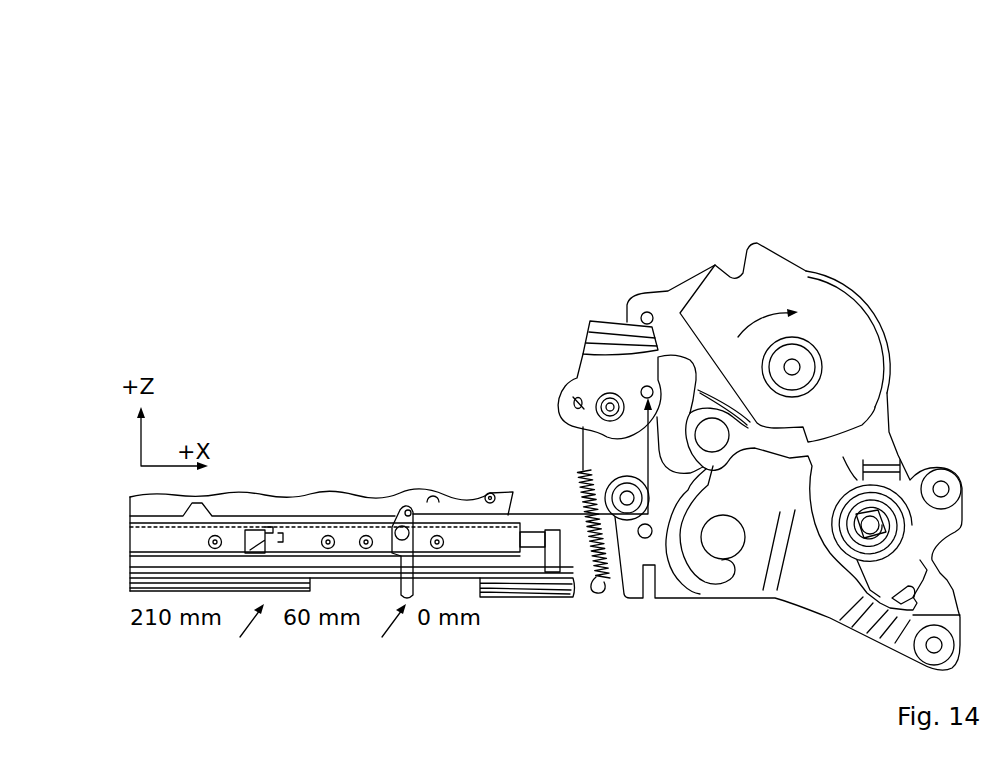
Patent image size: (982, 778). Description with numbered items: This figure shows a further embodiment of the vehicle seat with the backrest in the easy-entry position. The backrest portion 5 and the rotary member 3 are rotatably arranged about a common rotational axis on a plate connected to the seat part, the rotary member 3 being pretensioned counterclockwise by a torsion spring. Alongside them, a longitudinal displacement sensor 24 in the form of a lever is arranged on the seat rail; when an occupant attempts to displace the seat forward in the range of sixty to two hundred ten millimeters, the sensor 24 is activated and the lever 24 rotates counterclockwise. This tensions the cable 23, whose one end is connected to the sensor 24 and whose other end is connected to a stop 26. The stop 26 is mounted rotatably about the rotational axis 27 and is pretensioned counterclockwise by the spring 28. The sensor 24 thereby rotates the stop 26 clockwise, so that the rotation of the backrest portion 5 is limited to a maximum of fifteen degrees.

The rotary member 3 is at (848, 430).
The backrest portion 5 is at (763, 268).
The cable 23 is at (551, 492).
The longitudinal displacement sensor 24 is at (394, 500).
The stop 26 is at (605, 345).
The rotational axis 27 is at (609, 406).
The spring 28 is at (583, 553).